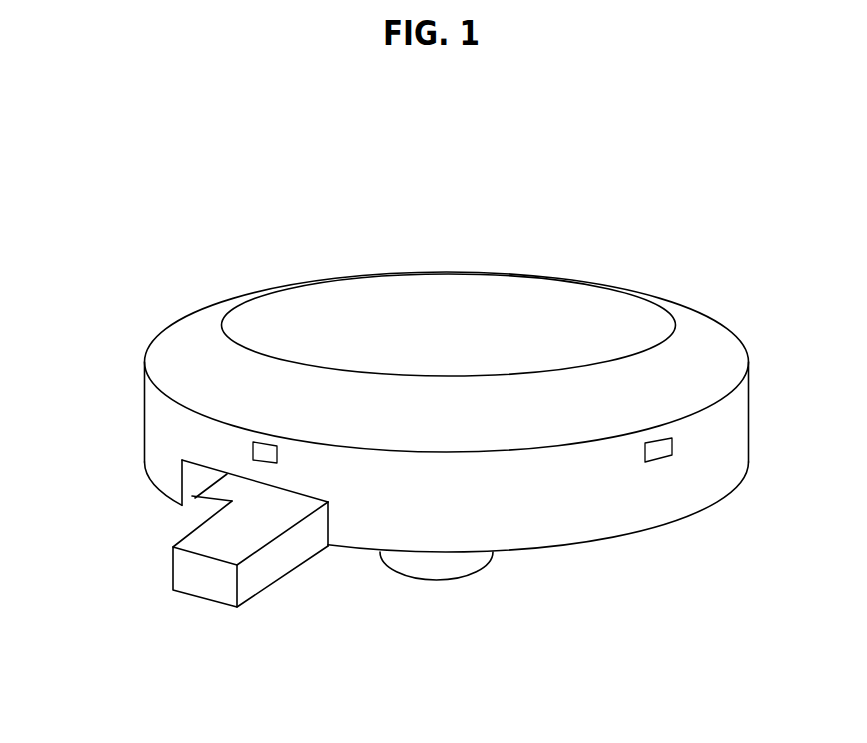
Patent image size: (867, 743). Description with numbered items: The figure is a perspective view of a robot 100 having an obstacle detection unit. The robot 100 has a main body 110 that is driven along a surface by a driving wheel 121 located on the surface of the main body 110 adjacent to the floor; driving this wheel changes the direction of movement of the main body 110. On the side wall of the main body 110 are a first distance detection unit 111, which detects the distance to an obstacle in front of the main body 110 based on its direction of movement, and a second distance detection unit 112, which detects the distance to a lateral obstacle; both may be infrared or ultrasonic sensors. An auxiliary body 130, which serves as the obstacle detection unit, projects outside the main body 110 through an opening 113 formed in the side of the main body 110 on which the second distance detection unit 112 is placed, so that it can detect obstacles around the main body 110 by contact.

The robot 100 is at (113, 106).
The main body 110 is at (712, 332).
The first distance detection unit 111 is at (672, 448).
The second distance detection unit 112 is at (253, 449).
The opening 113 is at (190, 475).
The driving wheel 121 is at (440, 563).
The auxiliary body 130 is at (213, 583).